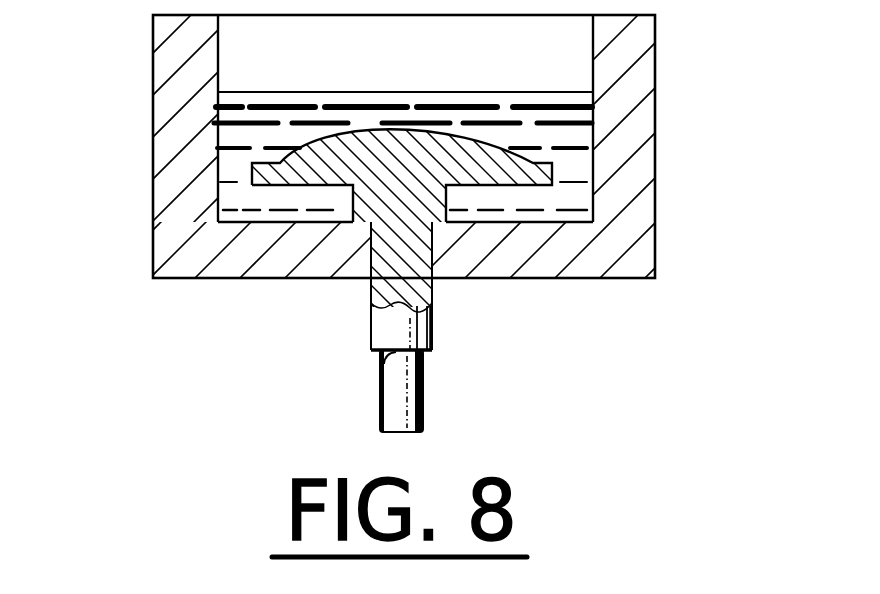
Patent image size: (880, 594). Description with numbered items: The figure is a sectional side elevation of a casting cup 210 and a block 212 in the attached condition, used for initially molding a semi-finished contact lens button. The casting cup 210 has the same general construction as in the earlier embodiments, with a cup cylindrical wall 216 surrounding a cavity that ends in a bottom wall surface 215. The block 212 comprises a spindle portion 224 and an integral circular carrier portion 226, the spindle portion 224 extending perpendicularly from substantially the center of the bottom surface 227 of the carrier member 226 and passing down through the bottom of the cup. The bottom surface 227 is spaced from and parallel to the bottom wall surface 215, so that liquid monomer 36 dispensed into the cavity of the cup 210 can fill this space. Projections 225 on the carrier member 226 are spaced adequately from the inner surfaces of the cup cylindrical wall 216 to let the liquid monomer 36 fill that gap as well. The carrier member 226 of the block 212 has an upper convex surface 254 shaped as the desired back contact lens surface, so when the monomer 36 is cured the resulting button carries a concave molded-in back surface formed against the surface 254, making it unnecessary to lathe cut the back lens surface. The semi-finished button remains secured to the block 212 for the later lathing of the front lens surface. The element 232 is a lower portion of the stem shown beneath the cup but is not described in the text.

The casting cup 210 is at (657, 34).
The cup cylindrical wall 216 is at (170, 112).
The liquid monomer 36 is at (320, 92).
The upper convex surface 254 is at (427, 133).
The carrier portion 226 is at (493, 156).
The projections 225 is at (560, 170).
The bottom wall surface 215 is at (554, 212).
The bottom surface 227 is at (293, 187).
The spindle portion 224 is at (433, 303).
The block 212 is at (433, 335).
The tube 232 is at (378, 398).